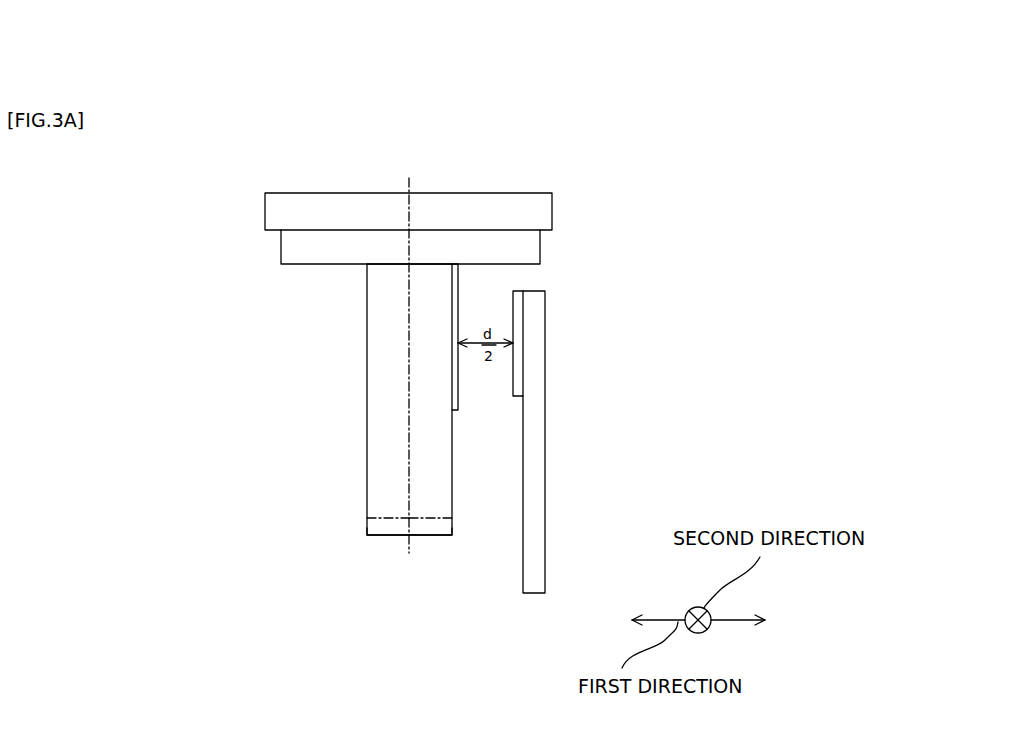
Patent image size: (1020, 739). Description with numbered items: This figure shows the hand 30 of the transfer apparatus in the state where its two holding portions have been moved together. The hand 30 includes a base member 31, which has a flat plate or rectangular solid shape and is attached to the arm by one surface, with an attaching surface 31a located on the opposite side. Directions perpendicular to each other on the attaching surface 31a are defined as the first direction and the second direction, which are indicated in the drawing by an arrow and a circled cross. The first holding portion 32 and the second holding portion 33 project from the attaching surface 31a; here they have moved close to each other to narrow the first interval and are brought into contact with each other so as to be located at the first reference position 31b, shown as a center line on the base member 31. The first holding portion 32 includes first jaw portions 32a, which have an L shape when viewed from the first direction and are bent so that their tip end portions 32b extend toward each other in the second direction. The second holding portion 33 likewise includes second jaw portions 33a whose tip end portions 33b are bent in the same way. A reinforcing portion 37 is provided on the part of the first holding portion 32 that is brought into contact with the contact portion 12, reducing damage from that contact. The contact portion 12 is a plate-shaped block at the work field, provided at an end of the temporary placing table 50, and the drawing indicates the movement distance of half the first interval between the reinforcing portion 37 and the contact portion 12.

The hand 30 is at (483, 171).
The base member 31 is at (543, 207).
The attaching surface 31a is at (302, 265).
The first reference position 31b is at (404, 180).
The first holding portion 32 is at (523, 438).
The first jaw portions 32a is at (437, 460).
The tip end portions 32b is at (443, 528).
The second holding portion 33 is at (348, 439).
The second jaw portions 33a is at (377, 413).
The tip end portions 33b is at (383, 528).
The reinforcing portion 37 is at (458, 283).
The contact portion 12 is at (520, 362).
The temporary placing table 50 is at (532, 522).